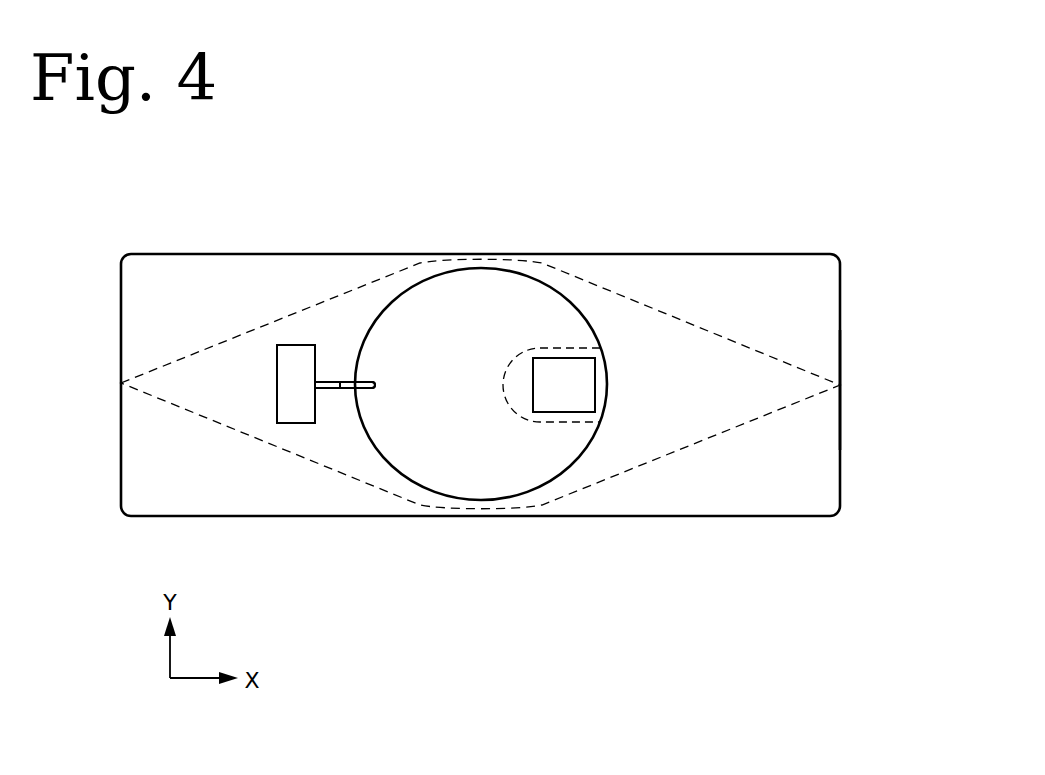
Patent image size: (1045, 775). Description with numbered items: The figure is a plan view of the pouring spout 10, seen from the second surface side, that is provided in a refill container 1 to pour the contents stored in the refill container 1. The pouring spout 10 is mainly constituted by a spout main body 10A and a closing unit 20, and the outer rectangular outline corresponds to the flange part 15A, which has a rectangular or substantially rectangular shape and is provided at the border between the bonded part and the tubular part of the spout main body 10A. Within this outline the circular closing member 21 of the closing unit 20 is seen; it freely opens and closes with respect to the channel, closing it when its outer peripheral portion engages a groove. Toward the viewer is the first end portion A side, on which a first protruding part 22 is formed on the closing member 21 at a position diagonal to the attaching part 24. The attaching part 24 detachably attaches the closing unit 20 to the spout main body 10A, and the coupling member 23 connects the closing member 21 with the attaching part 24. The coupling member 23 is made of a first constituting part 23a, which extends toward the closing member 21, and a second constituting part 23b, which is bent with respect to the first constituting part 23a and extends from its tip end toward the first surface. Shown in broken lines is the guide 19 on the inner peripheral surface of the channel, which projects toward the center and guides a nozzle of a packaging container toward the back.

The refill container 1 is at (665, 253).
The pouring spout 10 is at (722, 330).
The spout main body 10A is at (620, 337).
The flange part 15A is at (840, 451).
The guide 19 is at (552, 422).
The closing unit 20 is at (430, 313).
The closing member 21 is at (498, 298).
The first protruding part 22 is at (553, 372).
The coupling member 23 is at (340, 380).
The first constituting part 23a is at (322, 389).
The second constituting part 23b is at (349, 389).
The attaching part 24 is at (295, 345).
The first end portion A is at (432, 443).